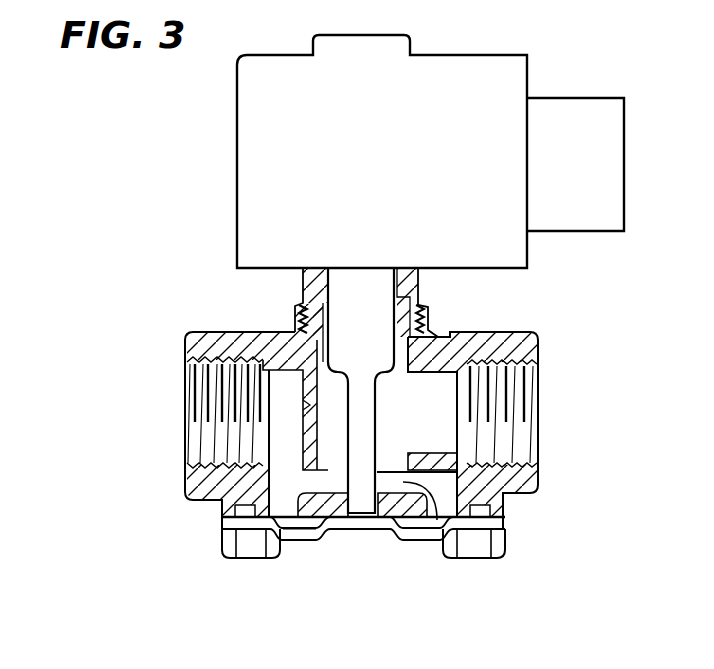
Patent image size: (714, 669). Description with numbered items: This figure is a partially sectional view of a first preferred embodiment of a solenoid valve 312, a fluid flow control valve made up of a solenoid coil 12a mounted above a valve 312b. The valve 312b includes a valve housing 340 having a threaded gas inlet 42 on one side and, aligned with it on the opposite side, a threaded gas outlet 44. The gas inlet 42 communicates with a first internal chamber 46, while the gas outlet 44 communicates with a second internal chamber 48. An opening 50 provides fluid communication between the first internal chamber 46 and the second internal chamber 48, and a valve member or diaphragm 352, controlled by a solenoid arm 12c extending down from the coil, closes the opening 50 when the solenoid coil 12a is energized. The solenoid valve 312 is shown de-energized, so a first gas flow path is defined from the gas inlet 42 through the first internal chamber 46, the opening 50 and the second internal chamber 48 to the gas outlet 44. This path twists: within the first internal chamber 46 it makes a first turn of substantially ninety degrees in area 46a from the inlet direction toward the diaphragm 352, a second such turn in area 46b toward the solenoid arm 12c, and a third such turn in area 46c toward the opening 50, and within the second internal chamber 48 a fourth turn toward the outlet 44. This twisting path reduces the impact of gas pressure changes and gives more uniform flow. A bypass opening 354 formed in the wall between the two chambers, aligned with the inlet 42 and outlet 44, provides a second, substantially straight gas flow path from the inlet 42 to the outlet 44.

The solenoid valve 312 is at (200, 150).
The solenoid coil 12a is at (490, 58).
The solenoid arm 12c is at (373, 295).
The valve housing 340 is at (211, 405).
The valve 312b is at (510, 406).
The bypass opening 354 is at (300, 422).
The threaded gas inlet 42 is at (203, 470).
The threaded gas outlet 44 is at (513, 457).
The second internal chamber 48 is at (443, 405).
The first internal chamber 46 is at (327, 560).
The area of first internal chamber 46a is at (215, 523).
The area of first internal chamber 46b is at (309, 510).
The area of first internal chamber 46c is at (437, 520).
The valve member or diaphragm 352 is at (348, 515).
The opening 50 is at (402, 463).